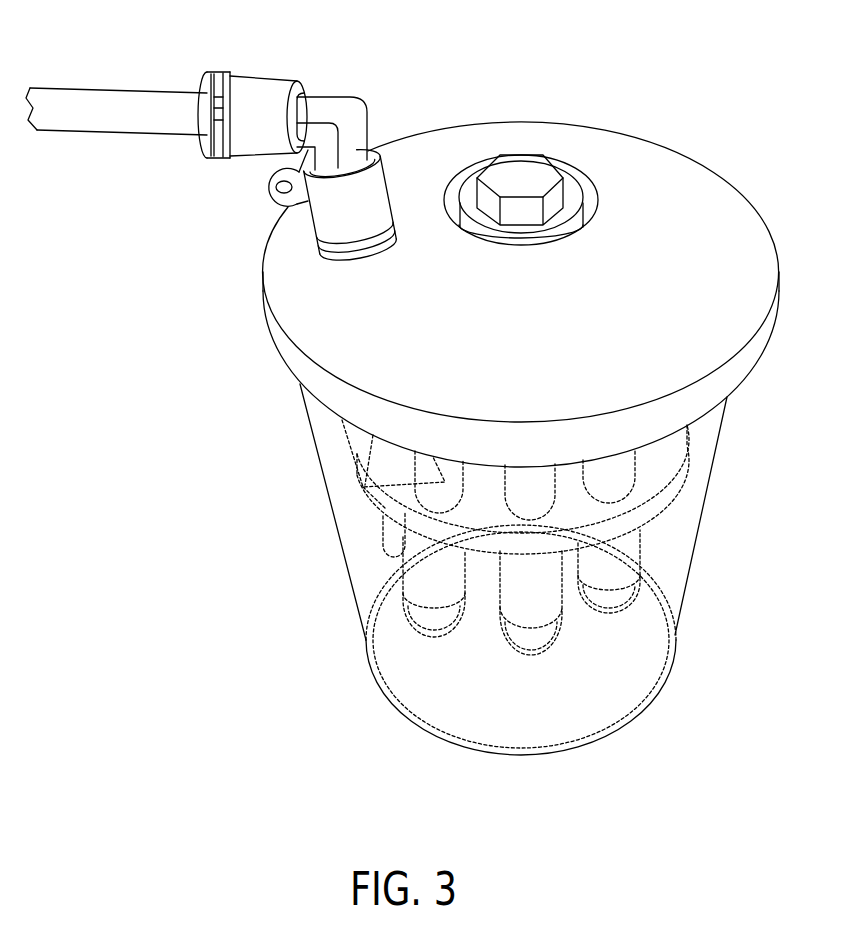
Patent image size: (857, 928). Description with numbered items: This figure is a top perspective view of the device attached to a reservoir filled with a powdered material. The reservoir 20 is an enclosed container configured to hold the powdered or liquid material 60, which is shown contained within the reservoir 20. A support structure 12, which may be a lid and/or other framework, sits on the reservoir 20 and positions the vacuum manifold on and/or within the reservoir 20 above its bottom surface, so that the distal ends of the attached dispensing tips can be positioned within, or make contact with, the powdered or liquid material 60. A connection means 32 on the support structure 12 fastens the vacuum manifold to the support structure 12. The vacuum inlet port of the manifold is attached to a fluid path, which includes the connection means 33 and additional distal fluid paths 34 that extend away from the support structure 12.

The support structure 12 is at (740, 232).
The reservoir 20 is at (667, 627).
The connection means 32 is at (523, 168).
The connection means 33 is at (277, 92).
The additional distal fluid paths 34 is at (98, 103).
The powdered or liquid material 60 is at (473, 730).